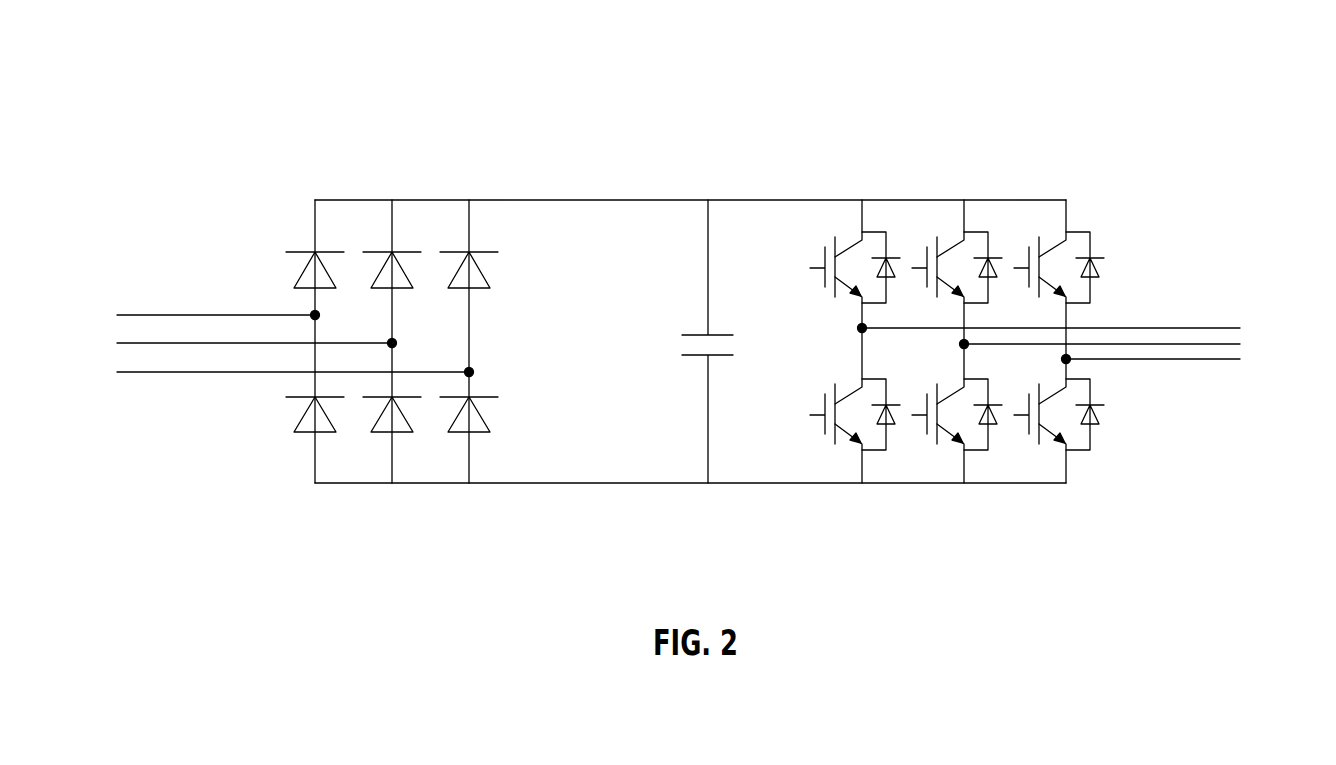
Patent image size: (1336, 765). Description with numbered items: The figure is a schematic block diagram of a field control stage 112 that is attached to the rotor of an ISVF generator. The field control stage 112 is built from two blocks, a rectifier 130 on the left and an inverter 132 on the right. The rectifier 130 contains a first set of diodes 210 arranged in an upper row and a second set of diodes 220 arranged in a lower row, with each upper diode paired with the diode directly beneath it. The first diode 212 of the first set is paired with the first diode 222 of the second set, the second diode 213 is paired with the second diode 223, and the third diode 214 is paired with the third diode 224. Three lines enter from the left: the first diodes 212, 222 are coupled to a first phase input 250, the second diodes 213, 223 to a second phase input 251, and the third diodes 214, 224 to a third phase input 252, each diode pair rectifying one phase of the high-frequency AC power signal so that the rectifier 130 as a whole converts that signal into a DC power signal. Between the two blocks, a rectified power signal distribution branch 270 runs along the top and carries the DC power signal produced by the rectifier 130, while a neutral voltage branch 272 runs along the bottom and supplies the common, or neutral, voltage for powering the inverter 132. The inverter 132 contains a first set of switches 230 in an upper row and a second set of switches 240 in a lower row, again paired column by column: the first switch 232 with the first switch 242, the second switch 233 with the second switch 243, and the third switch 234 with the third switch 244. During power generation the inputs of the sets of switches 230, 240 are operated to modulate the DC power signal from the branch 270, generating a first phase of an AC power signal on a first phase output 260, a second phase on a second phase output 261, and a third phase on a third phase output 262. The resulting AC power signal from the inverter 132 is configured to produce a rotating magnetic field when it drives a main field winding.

The field control stage 112 is at (211, 93).
The rectifier 130 is at (472, 499).
The inverter 132 is at (1070, 500).
The first set of diodes 210 is at (280, 250).
The first diode of the first set of diodes 212 is at (318, 290).
The second diode of the first set of diodes 213 is at (395, 290).
The third diode of the first set of diodes 214 is at (472, 290).
The second set of diodes 220 is at (280, 395).
The first diode of the second set of diodes 222 is at (318, 434).
The second diode of the second set of diodes 223 is at (395, 434).
The third diode of the second set of diodes 224 is at (472, 434).
The first set of switches 230 is at (1103, 228).
The first switch of the first set of switches 232 is at (822, 264).
The second switch of the first set of switches 233 is at (924, 264).
The third switch of the first set of switches 234 is at (1026, 264).
The second set of switches 240 is at (1103, 375).
The first switch of the second set of switches 242 is at (822, 422).
The second switch of the second set of switches 243 is at (924, 422).
The third switch of the second set of switches 244 is at (1026, 422).
The first phase input 250 is at (128, 315).
The second phase input 251 is at (128, 343).
The third phase input 252 is at (128, 372).
The first phase output 260 is at (1239, 327).
The second phase output 261 is at (1143, 343).
The third phase output 262 is at (1200, 360).
The rectified power signal distribution branch 270 is at (640, 200).
The neutral voltage branch 272 is at (640, 483).